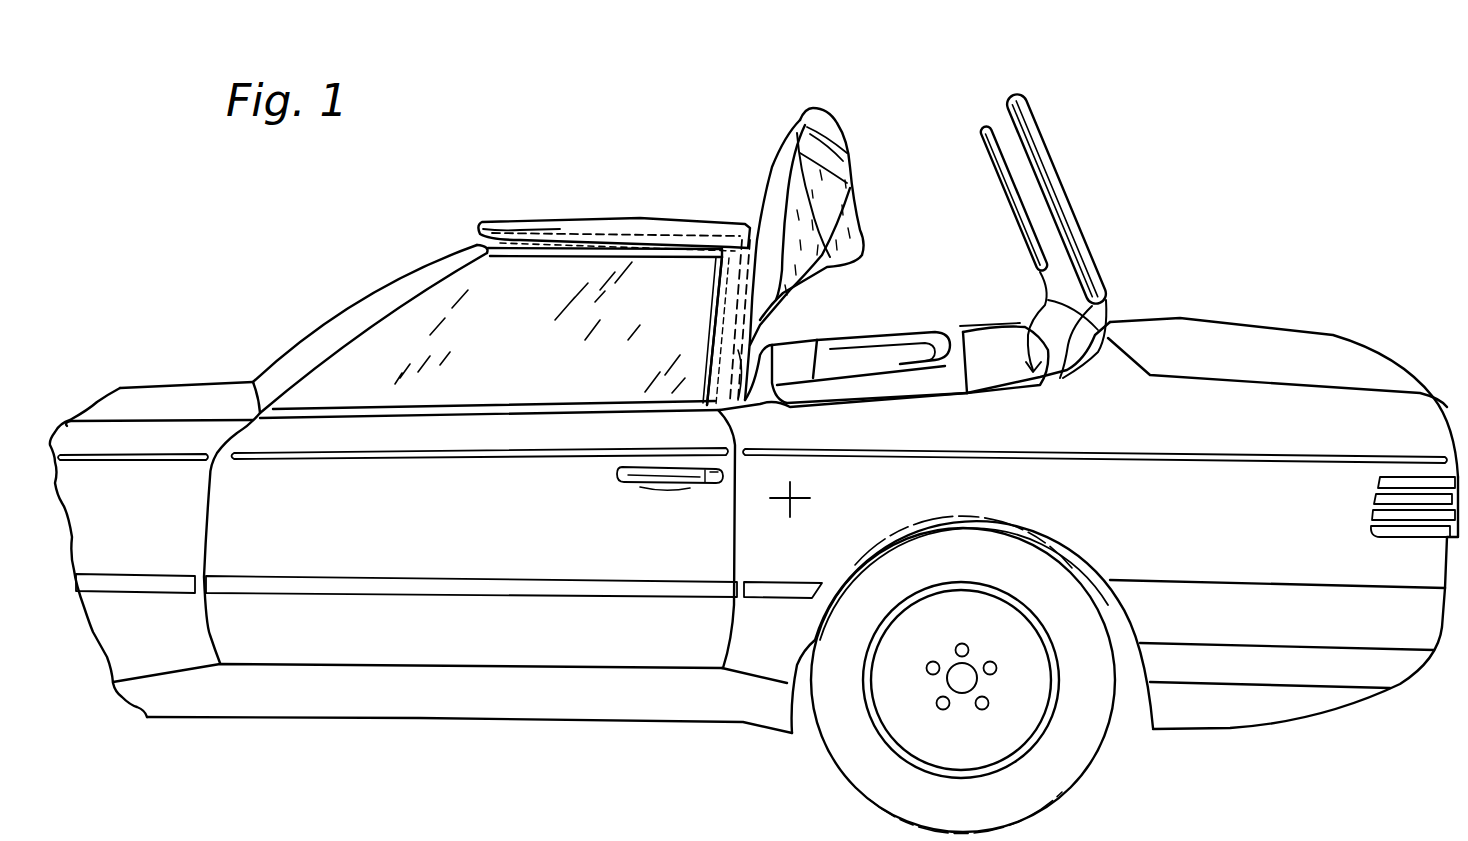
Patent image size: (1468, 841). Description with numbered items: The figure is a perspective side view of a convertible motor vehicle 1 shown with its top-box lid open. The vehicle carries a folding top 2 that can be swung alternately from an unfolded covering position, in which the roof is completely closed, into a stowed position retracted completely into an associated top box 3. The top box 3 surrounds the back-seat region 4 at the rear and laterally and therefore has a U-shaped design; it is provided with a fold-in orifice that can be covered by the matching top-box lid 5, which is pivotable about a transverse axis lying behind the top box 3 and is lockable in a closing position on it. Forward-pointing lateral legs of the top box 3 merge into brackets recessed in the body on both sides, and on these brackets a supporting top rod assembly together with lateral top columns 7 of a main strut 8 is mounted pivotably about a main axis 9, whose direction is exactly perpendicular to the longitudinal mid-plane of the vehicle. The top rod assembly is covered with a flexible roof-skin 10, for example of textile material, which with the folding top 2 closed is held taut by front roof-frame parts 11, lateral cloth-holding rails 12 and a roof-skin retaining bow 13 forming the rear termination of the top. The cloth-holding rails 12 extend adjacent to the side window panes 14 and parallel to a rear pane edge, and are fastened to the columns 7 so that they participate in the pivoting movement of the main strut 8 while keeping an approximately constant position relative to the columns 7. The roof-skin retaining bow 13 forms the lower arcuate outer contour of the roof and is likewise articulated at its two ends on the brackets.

The motor vehicle 1 is at (1236, 320).
The folding top 2 is at (640, 224).
The top box 3 is at (990, 355).
The back-seat region 4 is at (880, 355).
The top-box lid 5 is at (1058, 187).
The top columns 7 is at (740, 350).
The main strut 8 is at (751, 224).
The main axis 9 is at (786, 500).
The roof-skin 10 is at (545, 226).
The front roof-frame parts 11 is at (512, 226).
The cloth-holding rails 12 is at (718, 306).
The roof-skin retaining bow 13 is at (830, 120).
The side window panes 14 is at (522, 383).